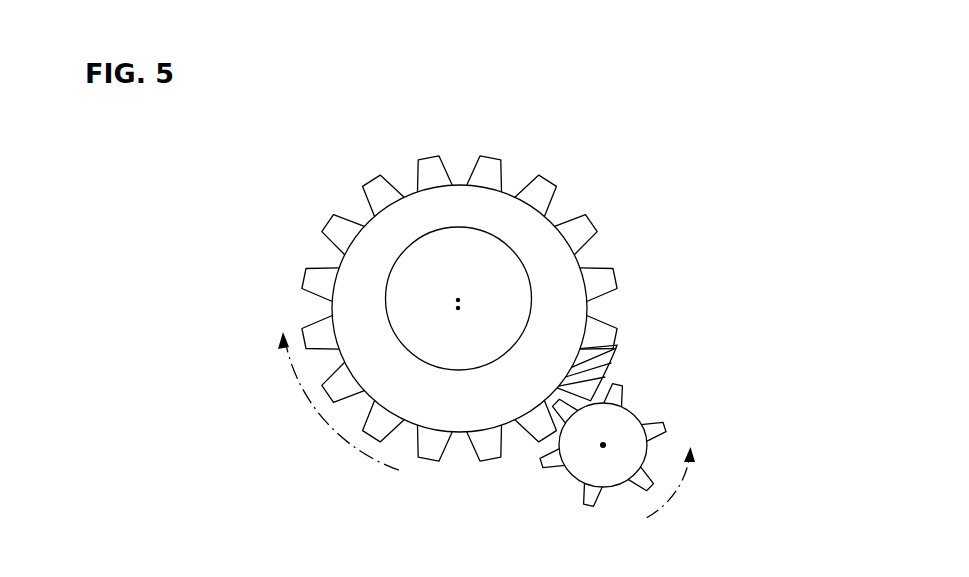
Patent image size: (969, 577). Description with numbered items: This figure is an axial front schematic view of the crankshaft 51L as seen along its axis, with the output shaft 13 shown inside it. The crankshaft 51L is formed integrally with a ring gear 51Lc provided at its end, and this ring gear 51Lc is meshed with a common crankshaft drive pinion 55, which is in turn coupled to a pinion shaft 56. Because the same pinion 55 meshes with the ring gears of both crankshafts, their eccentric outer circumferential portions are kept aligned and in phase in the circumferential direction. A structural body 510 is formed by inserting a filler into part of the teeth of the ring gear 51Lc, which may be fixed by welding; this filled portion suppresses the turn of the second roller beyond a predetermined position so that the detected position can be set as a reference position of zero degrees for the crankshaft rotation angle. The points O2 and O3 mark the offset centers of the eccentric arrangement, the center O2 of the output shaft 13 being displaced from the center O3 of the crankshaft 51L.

The crankshaft 51L is at (516, 178).
The ring gear 51Lc is at (368, 183).
The output shaft 13 is at (508, 277).
The structural body 510 is at (613, 350).
The crankshaft drive pinion 55 is at (658, 445).
The pinion shaft 56 is at (595, 476).
The center O2 is at (457, 298).
The center O3 is at (456, 310).